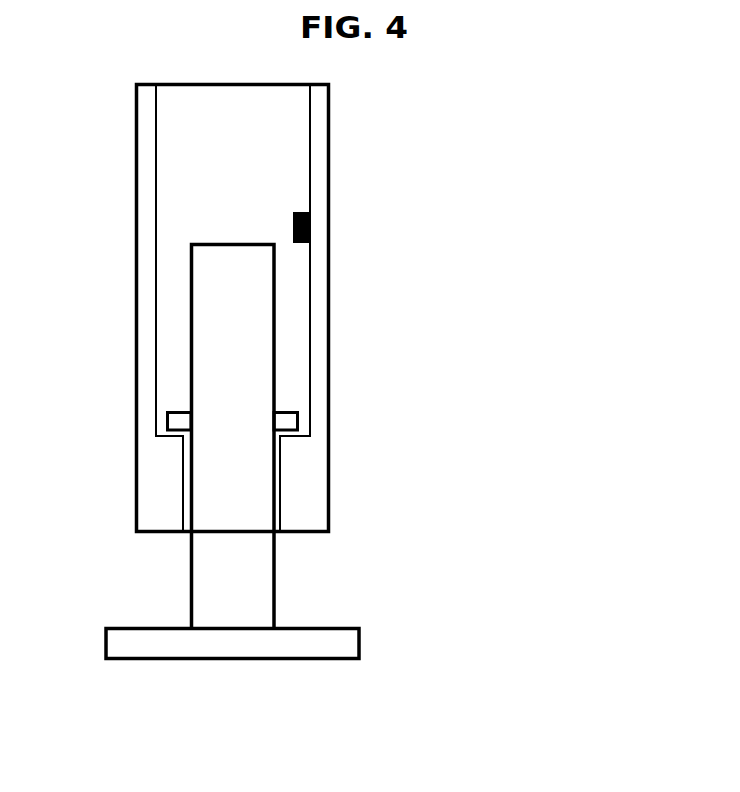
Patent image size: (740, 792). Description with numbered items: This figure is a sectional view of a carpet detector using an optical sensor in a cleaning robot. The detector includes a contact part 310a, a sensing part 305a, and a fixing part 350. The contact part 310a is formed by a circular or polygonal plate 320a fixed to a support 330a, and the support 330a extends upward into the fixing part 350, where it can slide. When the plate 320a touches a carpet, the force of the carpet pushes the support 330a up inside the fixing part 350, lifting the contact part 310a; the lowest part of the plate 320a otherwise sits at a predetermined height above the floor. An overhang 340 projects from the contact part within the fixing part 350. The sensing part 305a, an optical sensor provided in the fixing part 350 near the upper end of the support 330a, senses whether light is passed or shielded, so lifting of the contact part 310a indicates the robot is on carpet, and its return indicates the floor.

The sensing part 305a is at (320, 231).
The fixing part 350 is at (336, 327).
The overhang 340 is at (298, 412).
The support 330a is at (275, 562).
The plate 320a is at (291, 638).
The contact part 310a is at (353, 453).